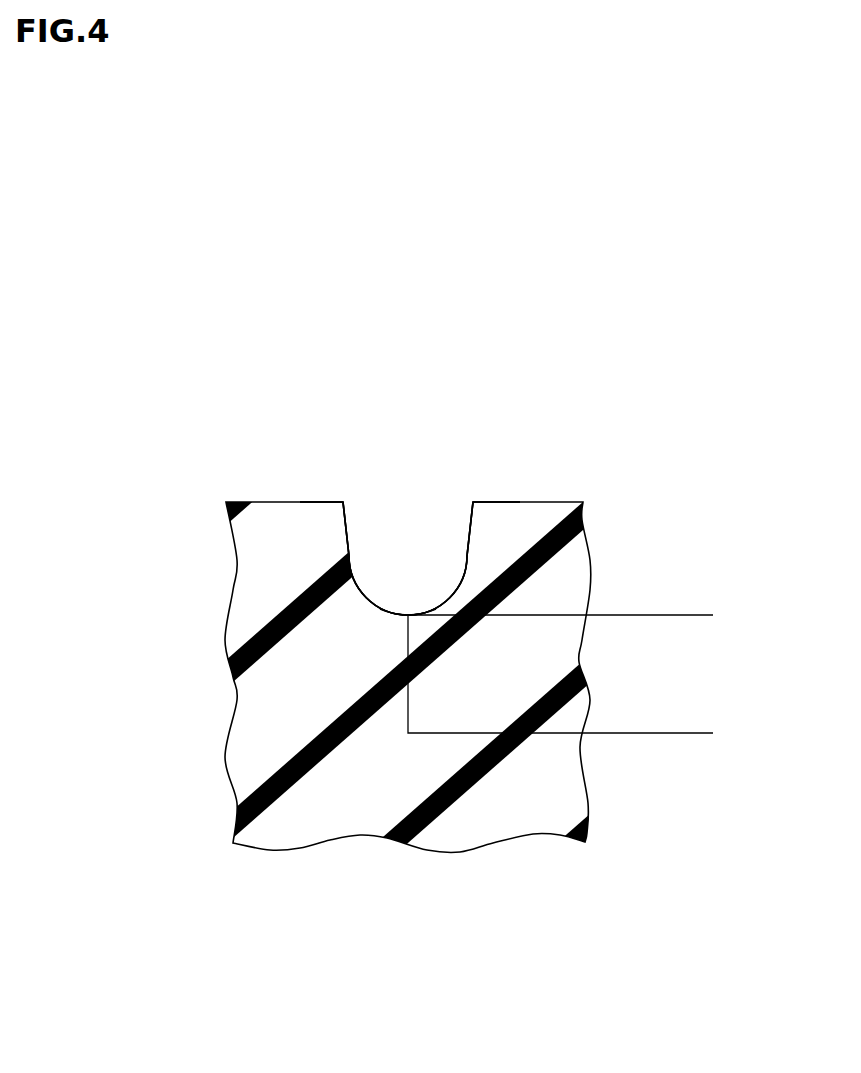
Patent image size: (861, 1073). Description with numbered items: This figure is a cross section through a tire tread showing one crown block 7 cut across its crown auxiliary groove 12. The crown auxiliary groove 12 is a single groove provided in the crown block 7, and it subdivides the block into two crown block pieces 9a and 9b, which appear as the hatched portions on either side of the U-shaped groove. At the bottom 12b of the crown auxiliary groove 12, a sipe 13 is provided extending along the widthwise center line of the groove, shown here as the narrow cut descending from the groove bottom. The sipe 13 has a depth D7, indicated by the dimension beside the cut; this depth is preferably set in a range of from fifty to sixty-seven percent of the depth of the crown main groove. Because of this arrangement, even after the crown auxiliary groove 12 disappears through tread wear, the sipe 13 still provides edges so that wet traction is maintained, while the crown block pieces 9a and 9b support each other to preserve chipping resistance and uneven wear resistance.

The crown block 7 is at (522, 376).
The crown block piece 9a is at (325, 500).
The crown block piece 9b is at (505, 500).
The crown auxiliary groove 12 is at (413, 552).
The bottom of crown auxiliary groove 12b is at (404, 615).
The sipe 13 is at (408, 702).
The depth of sipe D7 is at (710, 616).